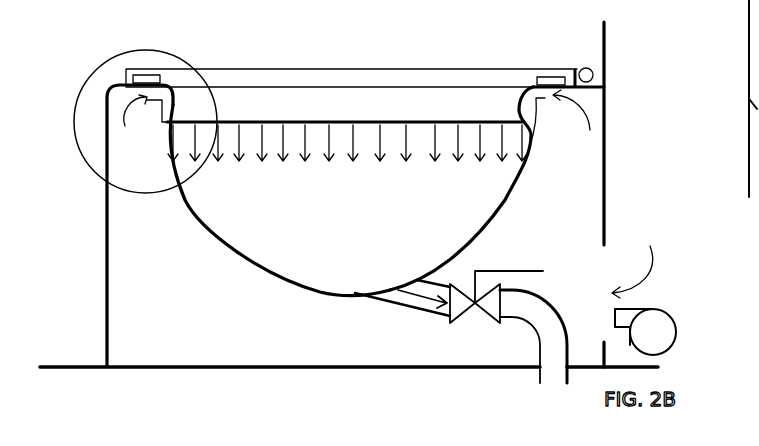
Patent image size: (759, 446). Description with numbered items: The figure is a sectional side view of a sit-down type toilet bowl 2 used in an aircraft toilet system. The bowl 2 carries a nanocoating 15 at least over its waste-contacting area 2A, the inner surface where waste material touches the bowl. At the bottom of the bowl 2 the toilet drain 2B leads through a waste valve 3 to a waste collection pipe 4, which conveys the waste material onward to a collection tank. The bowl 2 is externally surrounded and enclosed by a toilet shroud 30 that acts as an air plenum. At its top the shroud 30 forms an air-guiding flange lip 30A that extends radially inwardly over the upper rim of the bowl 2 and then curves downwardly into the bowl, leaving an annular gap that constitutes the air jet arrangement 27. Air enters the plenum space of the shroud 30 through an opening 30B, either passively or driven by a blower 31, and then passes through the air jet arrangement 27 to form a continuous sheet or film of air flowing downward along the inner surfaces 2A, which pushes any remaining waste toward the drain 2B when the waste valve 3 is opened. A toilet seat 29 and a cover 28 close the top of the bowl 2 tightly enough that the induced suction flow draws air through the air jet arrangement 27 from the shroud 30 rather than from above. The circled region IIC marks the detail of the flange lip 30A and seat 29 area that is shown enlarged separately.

The toilet bowl 2 is at (340, 262).
The waste-contacting area 2A is at (203, 222).
The toilet drain 2B is at (408, 305).
The waste valve 3 is at (493, 318).
The waste collection pipe 4 is at (553, 318).
The nanocoating 15 is at (469, 245).
The air jet arrangement 27 is at (550, 113).
The cover 28 is at (433, 68).
The toilet seat 29 is at (143, 75).
The toilet shroud 30 is at (110, 245).
The air-guiding flange lip 30A is at (172, 121).
The opening 30B is at (607, 263).
The blower 31 is at (663, 325).
The detail view callout IIC is at (79, 94).